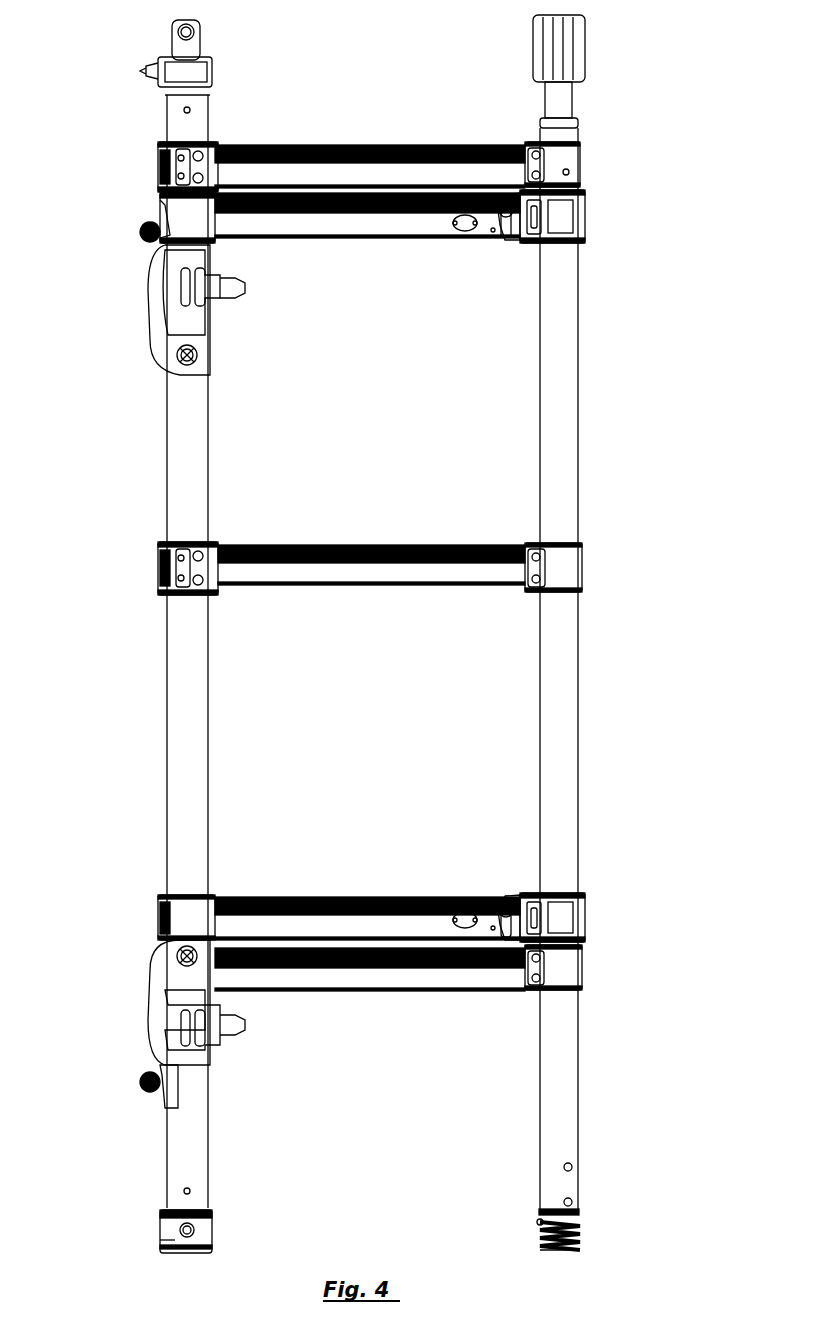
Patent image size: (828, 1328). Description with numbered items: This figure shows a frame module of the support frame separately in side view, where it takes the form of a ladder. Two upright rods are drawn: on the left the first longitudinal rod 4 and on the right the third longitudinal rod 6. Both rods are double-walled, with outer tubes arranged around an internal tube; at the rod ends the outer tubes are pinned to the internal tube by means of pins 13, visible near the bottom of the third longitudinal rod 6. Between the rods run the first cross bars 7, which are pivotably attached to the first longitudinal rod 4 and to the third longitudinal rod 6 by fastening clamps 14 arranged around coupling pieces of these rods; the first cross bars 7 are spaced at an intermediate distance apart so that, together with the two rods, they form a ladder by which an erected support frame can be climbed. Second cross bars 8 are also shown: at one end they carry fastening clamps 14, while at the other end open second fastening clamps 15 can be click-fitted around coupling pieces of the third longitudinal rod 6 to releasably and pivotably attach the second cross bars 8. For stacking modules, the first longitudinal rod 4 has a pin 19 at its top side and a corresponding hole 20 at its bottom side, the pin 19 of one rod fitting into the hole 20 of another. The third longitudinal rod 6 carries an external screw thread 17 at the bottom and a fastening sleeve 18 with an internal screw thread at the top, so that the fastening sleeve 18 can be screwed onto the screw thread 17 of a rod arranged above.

The first longitudinal rod 4 is at (176, 708).
The third longitudinal rod 6 is at (570, 708).
The first cross bars 7 is at (375, 218).
The second cross bars 8 is at (368, 148).
The pins 13 is at (572, 1167).
The fastening clamps 14 is at (165, 166).
The open second fastening clamps 15 is at (580, 213).
The external screw thread 17 is at (580, 1237).
The fastening sleeve 18 is at (582, 48).
The pin 19 is at (172, 37).
The hole 20 is at (172, 1240).